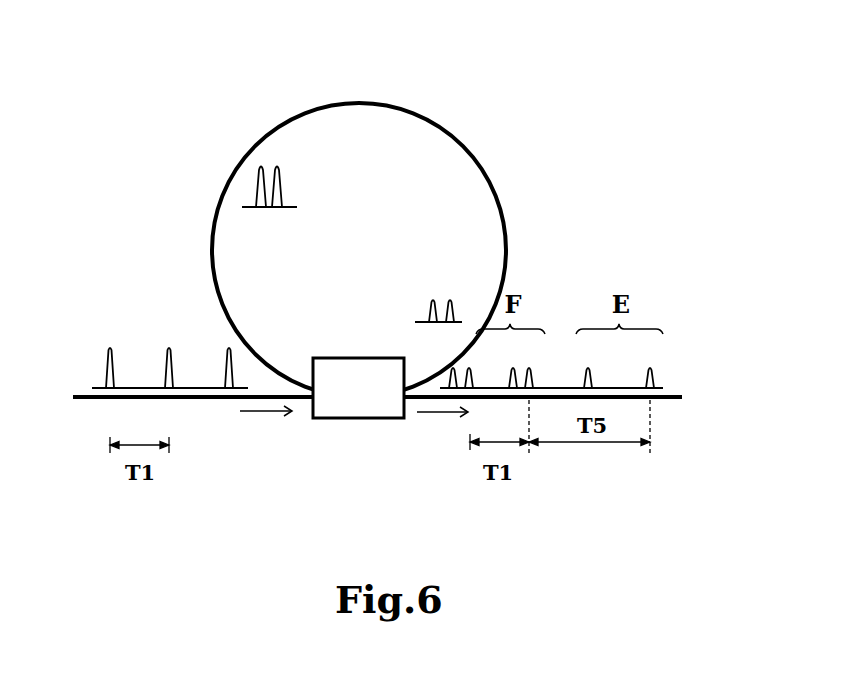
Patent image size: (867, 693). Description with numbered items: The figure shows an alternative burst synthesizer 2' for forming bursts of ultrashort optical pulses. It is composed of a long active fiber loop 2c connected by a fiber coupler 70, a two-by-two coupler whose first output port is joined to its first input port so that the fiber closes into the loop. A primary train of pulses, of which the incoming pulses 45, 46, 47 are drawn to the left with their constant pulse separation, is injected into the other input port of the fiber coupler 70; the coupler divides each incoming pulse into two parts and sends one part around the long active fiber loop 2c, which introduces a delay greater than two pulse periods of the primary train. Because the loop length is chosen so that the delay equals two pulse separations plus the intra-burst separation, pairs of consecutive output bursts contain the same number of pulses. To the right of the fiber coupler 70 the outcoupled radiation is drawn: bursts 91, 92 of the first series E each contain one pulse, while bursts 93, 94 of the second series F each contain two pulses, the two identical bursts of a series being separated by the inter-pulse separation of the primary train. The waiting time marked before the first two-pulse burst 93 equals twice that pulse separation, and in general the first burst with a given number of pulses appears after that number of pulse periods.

The burst synthesizer 2' is at (78, 85).
The long active fiber loop 2c is at (468, 148).
The incoming pulse 45 is at (228, 355).
The incoming pulse 46 is at (169, 355).
The incoming pulse 47 is at (110, 355).
The fiber coupler 70 is at (343, 403).
The burst of the first series 91 is at (649, 365).
The burst of the first series 92 is at (590, 365).
The burst of the second series 93 is at (522, 365).
The burst of the second series 94 is at (471, 365).